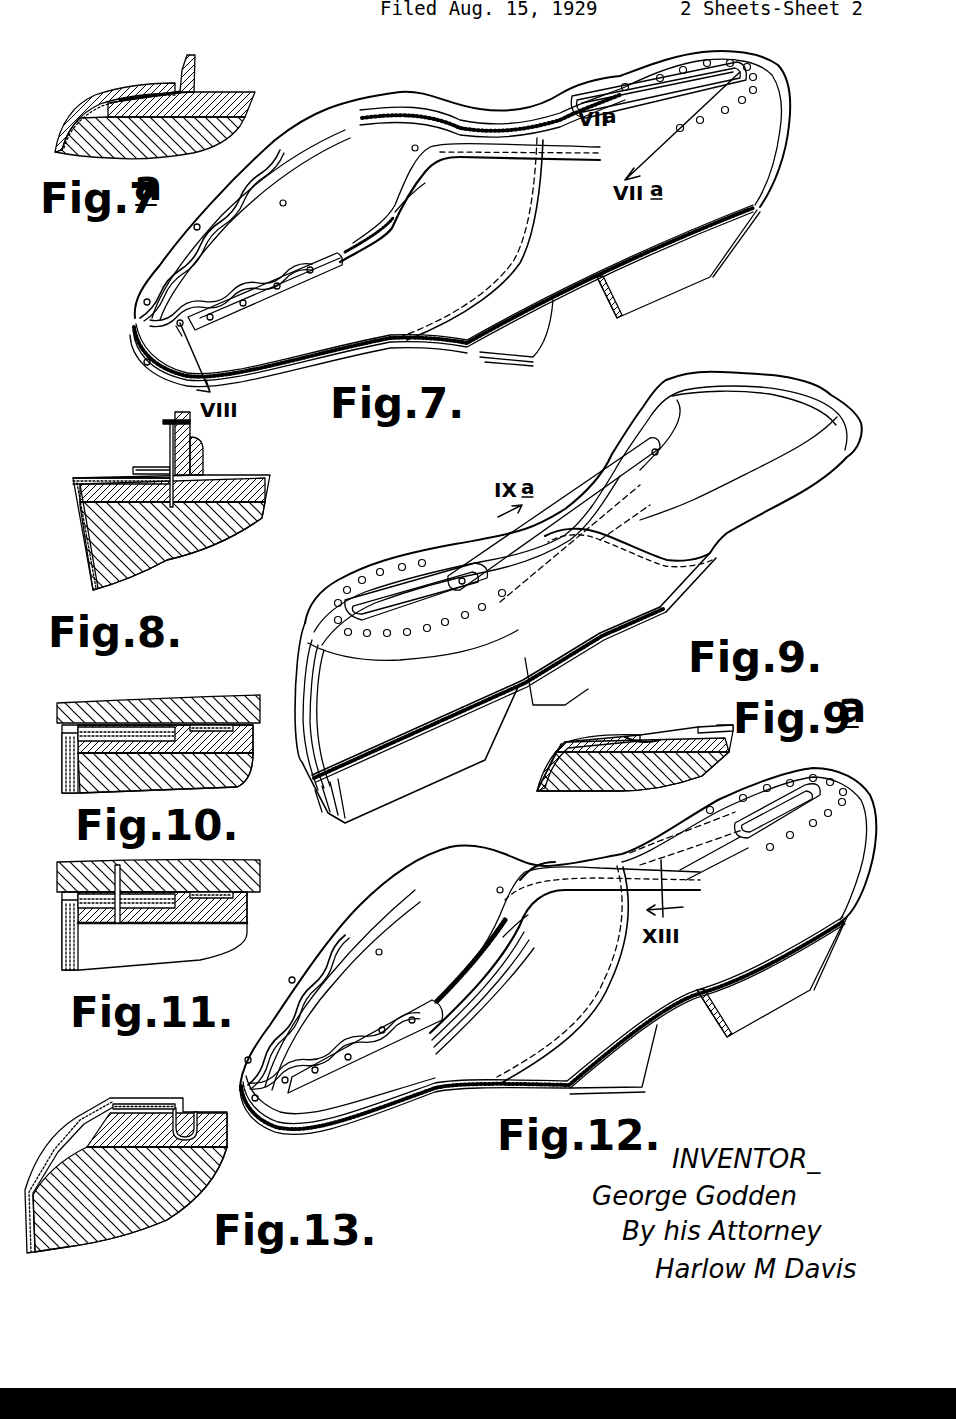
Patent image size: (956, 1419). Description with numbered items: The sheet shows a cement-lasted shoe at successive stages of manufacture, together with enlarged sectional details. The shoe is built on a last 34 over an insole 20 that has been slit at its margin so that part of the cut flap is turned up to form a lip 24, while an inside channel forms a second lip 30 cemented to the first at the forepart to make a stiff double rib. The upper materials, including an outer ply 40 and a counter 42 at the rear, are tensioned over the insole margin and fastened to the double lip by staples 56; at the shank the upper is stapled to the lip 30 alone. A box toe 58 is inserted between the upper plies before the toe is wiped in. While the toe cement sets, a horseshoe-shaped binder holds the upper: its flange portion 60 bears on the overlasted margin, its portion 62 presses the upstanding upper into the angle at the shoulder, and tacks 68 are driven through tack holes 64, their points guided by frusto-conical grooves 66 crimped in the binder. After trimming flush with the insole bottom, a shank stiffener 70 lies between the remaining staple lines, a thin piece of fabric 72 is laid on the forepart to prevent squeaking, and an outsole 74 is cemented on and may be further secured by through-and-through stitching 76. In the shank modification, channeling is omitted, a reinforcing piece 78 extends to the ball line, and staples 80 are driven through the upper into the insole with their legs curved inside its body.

In FIG. 7A, the insole 20 is at (247, 102).
In FIG. 8, the insole 20 is at (172, 546).
In FIG. 9A, the insole 20 is at (725, 748).
In FIG. 8, the lip 24 is at (203, 453).
In FIG. 7A, the lip 30 is at (193, 87).
In FIG. 8, the lip 30 is at (207, 468).
In FIG. 7, the last 34 is at (520, 340).
In FIG. 7A, the outer ply 40 is at (90, 95).
In FIG. 9A, the outer ply 40 is at (600, 738).
In FIG. 7A, the counter 42 is at (123, 88).
In FIG. 7A, the staple 56 is at (167, 85).
In FIG. 7, the staple 56 is at (543, 140).
In FIG. 9, the staple 56 is at (590, 547).
In FIG. 9A, the staple 56 is at (648, 738).
In FIG. 12, the staple 56 is at (525, 950).
In FIG. 8, the box toe 58 is at (113, 477).
In FIG. 7, the portion of binder 60 is at (297, 293).
In FIG. 8, the portion of binder 60 is at (143, 467).
In FIG. 12, the portion of binder 60 is at (344, 1092).
In FIG. 7, the portion of binder 62 is at (263, 297).
In FIG. 8, the portion of binder 62 is at (190, 427).
In FIG. 7, the tack holes 64 is at (213, 313).
In FIG. 7, the frusto-conical grooves 66 is at (243, 297).
In FIG. 7, the tacks 68 is at (277, 283).
In FIG. 8, the tacks 68 is at (163, 420).
In FIG. 12, the tacks 68 is at (288, 1090).
In FIG. 9, the shank stiffener 70 is at (494, 572).
In FIG. 9A, the shank stiffener 70 is at (720, 727).
In FIG. 10, the piece of fabric 72 is at (213, 723).
In FIG. 11, the piece of fabric 72 is at (207, 890).
In FIG. 10, the outsole 74 is at (78, 712).
In FIG. 11, the outsole 74 is at (137, 870).
In FIG. 11, the through-and-through stitching 76 is at (120, 923).
In FIG. 12, the reinforcing piece 78 is at (520, 874).
In FIG. 13, the reinforcing piece 78 is at (198, 1110).
In FIG. 12, the staples 80 is at (697, 867).
In FIG. 13, the staples 80 is at (165, 1100).